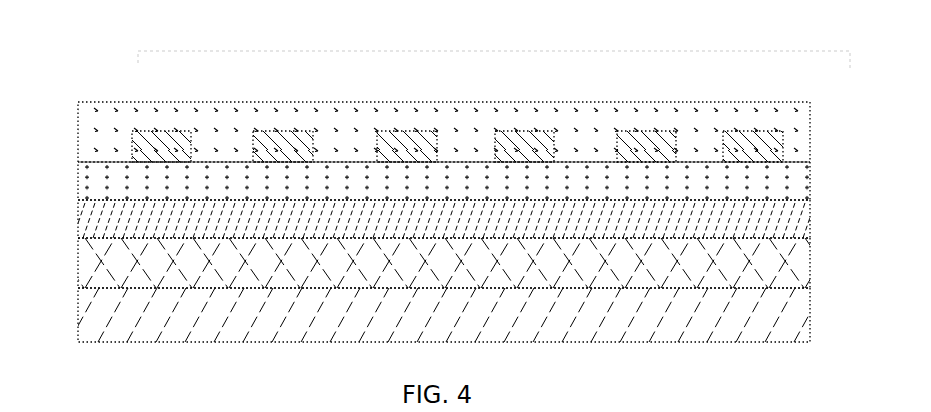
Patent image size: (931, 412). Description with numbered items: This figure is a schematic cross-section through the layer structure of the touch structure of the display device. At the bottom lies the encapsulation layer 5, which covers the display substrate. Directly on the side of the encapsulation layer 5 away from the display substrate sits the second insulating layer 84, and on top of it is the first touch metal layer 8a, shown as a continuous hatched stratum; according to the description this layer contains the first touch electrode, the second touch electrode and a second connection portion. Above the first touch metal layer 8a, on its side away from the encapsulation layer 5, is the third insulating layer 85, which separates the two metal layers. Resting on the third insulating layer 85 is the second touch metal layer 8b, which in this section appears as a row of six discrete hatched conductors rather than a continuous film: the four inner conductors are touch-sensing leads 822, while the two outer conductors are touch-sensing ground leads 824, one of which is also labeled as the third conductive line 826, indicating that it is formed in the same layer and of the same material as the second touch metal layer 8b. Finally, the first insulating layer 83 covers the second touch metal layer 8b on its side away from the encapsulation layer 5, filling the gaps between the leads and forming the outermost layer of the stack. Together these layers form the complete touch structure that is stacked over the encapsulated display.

The encapsulation layer 5 is at (790, 322).
The first touch metal layer 8a is at (786, 236).
The second touch metal layer 8b is at (513, 51).
The first insulating layer 83 is at (103, 133).
The second insulating layer 84 is at (105, 272).
The third insulating layer 85 is at (110, 195).
The touch-sensing lead 822 is at (280, 131).
The touch-sensing ground lead 824 is at (153, 131).
The third conductive line 826 is at (745, 131).